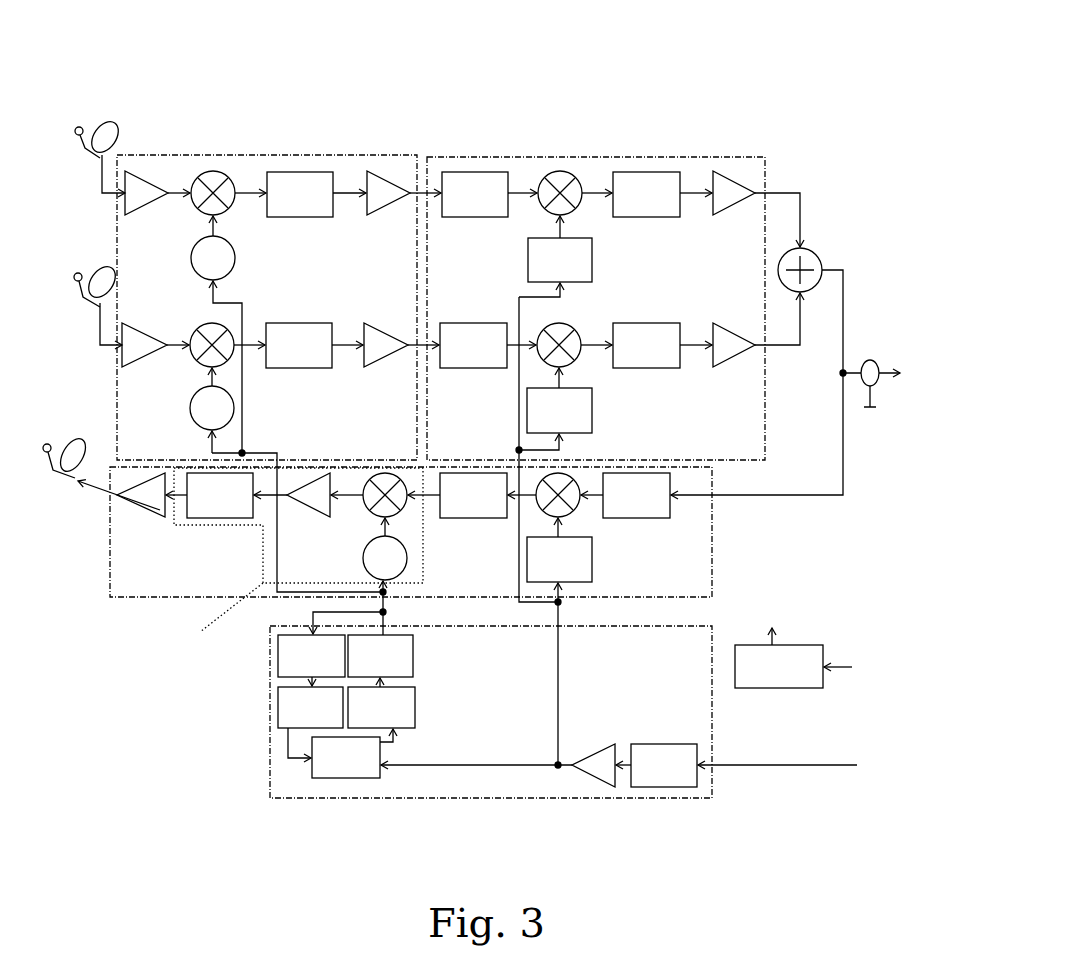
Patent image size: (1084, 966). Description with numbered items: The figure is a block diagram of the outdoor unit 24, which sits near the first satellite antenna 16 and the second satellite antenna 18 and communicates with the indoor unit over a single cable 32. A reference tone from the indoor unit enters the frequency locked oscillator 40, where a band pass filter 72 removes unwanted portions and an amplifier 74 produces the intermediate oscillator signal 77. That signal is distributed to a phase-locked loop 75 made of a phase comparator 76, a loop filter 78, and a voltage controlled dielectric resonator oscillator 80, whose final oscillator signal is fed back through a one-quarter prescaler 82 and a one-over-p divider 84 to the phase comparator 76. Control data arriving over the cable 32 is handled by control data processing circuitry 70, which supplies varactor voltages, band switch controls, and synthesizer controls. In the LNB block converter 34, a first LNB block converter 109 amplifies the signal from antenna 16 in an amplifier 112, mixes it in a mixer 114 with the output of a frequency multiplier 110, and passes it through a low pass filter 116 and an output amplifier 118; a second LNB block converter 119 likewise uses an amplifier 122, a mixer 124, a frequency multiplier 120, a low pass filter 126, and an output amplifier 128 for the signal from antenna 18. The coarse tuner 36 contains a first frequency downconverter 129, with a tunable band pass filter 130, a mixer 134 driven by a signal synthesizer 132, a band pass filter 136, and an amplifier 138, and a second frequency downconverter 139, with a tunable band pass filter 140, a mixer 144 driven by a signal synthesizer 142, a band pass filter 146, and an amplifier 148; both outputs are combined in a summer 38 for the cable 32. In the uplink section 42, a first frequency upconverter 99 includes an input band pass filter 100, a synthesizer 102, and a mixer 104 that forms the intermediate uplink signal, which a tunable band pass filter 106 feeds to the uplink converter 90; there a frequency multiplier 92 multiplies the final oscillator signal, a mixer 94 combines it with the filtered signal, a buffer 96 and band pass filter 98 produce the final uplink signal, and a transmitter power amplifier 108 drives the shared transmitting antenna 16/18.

The first satellite antenna 16 is at (110, 122).
The second satellite antenna 18 is at (104, 263).
The outdoor unit 24 is at (638, 65).
The cable 32 is at (868, 360).
The LNB block converter 34 is at (357, 155).
The coarse tuner 36 is at (447, 157).
The summer 38 is at (815, 278).
The frequency locked oscillator 40 is at (455, 800).
The uplink section 42 is at (712, 545).
The control data processing circuitry 70 is at (758, 689).
The band pass filter 72 is at (665, 788).
The amplifier 74 is at (598, 753).
The phase-locked loop 75 is at (250, 744).
The phase comparator 76 is at (372, 756).
The intermediate oscillator signal 77 is at (563, 760).
The loop filter 78 is at (415, 710).
The voltage controlled dielectric resonator oscillator 80 is at (413, 666).
The ¼ prescaler 82 is at (278, 659).
The 1/p divider 84 is at (278, 708).
The uplink converter 90 is at (263, 548).
The frequency multiplier 92 is at (362, 554).
The mixer 94 is at (376, 506).
The buffer 96 is at (310, 500).
The band pass filter 98 is at (218, 505).
The first frequency upconverter 99 is at (672, 563).
The uplink input band pass filter 100 is at (642, 513).
The third synthesizer 102 is at (592, 568).
The mixer 104 is at (573, 510).
The tunable band pass filter 106 is at (466, 515).
The transmitter power amplifier 108 is at (115, 515).
The first LNB block converter 109 is at (255, 282).
The frequency multiplier 110 is at (236, 258).
The amplifier 112 is at (138, 203).
The mixer 114 is at (228, 202).
The low pass filter 116 is at (310, 206).
The output amplifier 118 is at (385, 206).
The second LNB block converter 119 is at (268, 388).
The frequency multiplier 120 is at (200, 418).
The amplifier 122 is at (130, 338).
The mixer 124 is at (203, 326).
The low pass filter 126 is at (313, 330).
The output amplifier 128 is at (376, 343).
The first frequency downconverter 129 is at (479, 268).
The tunable band pass filter 130 is at (452, 212).
The signal synthesizer 132 is at (592, 268).
The mixer 134 is at (576, 206).
The band pass filter 136 is at (662, 212).
The amplifier 138 is at (735, 184).
The second frequency downconverter 139 is at (485, 416).
The tunable band pass filter 140 is at (448, 362).
The signal synthesizer 142 is at (585, 422).
The mixer 144 is at (574, 358).
The band pass filter 146 is at (660, 364).
The amplifier 148 is at (725, 343).